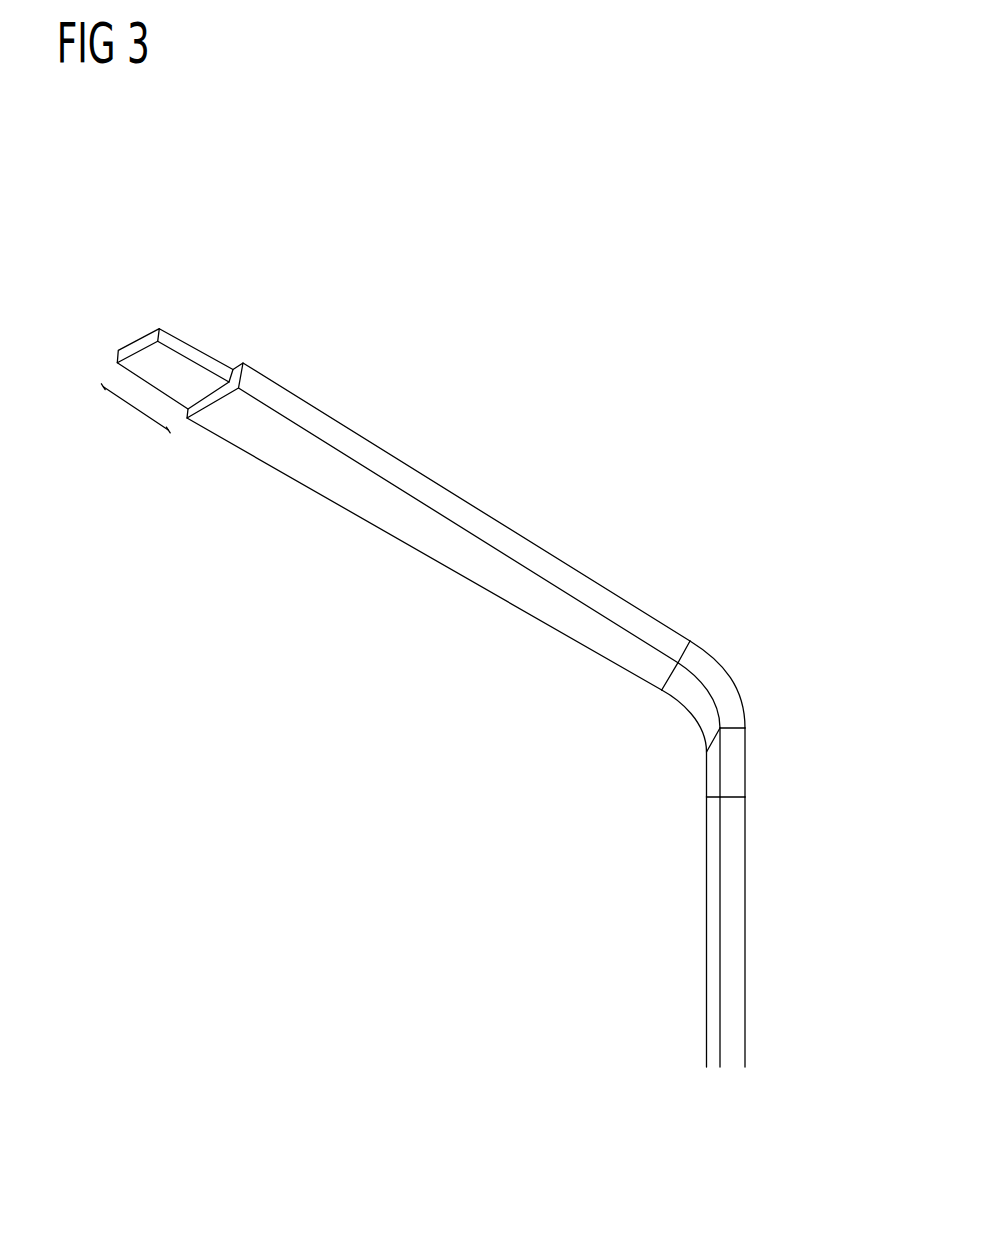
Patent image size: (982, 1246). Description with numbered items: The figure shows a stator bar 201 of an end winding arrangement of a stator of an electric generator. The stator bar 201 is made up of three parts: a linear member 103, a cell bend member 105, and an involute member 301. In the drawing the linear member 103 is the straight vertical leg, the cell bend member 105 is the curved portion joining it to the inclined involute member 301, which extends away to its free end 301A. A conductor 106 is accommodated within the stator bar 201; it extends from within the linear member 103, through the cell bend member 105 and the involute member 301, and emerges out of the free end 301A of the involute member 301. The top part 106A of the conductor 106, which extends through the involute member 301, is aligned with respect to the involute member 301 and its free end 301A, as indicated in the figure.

The stator bar 201 is at (613, 355).
The conductor 106 is at (147, 340).
The top part of the conductor 106A is at (133, 412).
The free end of the involute member 301A is at (235, 363).
The involute member 301 is at (467, 578).
The cell bend member 105 is at (690, 720).
The linear member 103 is at (745, 932).